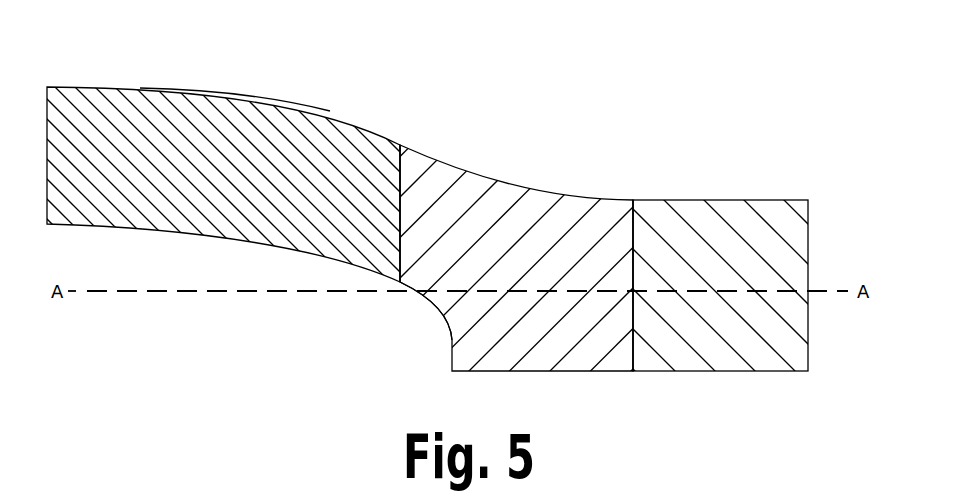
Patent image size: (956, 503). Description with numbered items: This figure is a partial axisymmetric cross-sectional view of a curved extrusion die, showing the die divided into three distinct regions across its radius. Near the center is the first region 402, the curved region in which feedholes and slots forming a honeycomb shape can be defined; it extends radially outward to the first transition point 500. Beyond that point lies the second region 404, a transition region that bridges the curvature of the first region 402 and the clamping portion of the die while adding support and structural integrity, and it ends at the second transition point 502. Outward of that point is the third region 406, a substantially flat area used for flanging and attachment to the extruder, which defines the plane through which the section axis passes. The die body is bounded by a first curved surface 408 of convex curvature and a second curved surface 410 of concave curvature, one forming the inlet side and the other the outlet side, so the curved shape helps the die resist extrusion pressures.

The first region 402 is at (204, 175).
The second region 404 is at (534, 255).
The third region 406 is at (737, 256).
The first curved surface 408 is at (236, 98).
The second curved surface 410 is at (414, 309).
The first transition point 500 is at (400, 131).
The second transition point 502 is at (633, 186).